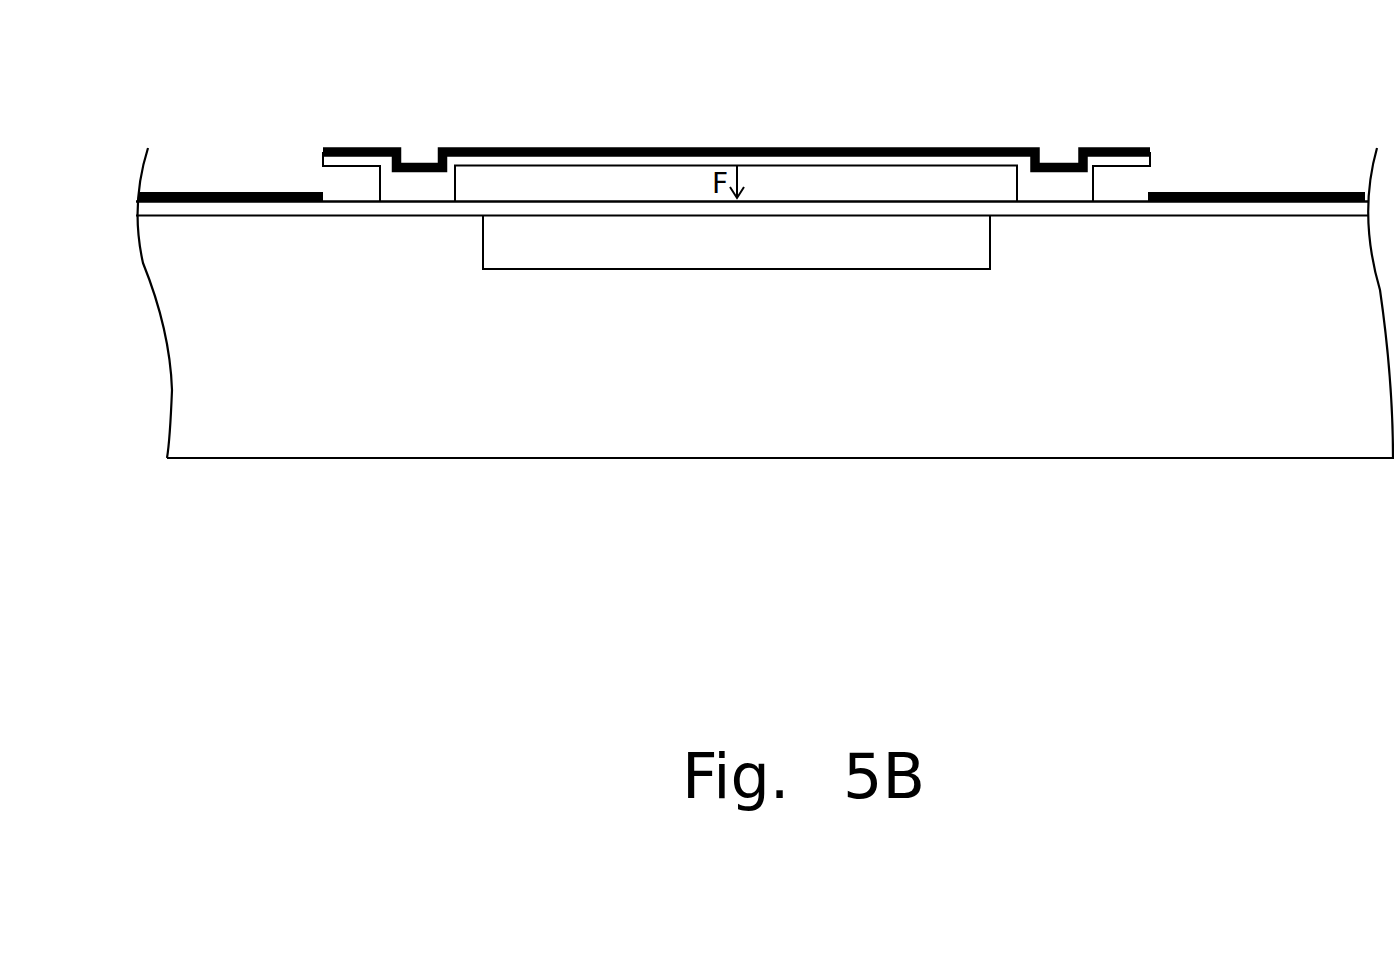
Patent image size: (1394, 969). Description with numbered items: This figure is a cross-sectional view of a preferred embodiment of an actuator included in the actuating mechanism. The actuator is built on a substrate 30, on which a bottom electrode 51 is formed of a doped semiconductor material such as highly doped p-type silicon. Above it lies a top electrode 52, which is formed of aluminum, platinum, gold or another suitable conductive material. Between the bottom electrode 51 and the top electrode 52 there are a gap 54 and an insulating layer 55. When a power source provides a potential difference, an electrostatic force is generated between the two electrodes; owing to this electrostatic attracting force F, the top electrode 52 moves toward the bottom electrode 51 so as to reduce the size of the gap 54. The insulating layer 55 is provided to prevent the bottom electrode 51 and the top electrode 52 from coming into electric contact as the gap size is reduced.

The substrate 30 is at (1217, 412).
The bottom electrode 51 is at (912, 243).
The top electrode 52 is at (760, 148).
The gap 54 is at (687, 183).
The insulating layer 55 is at (815, 204).